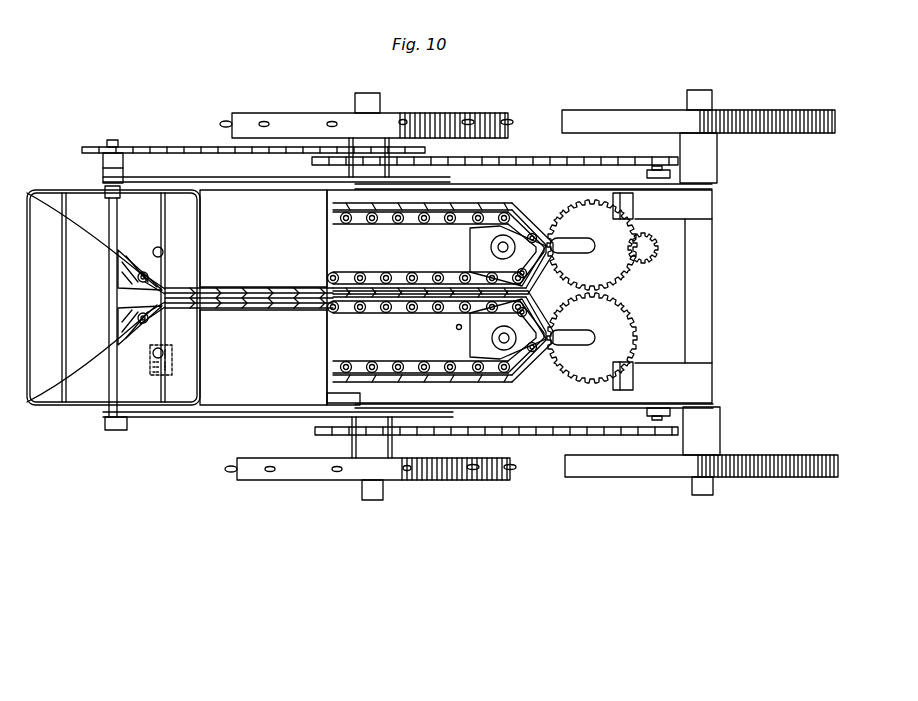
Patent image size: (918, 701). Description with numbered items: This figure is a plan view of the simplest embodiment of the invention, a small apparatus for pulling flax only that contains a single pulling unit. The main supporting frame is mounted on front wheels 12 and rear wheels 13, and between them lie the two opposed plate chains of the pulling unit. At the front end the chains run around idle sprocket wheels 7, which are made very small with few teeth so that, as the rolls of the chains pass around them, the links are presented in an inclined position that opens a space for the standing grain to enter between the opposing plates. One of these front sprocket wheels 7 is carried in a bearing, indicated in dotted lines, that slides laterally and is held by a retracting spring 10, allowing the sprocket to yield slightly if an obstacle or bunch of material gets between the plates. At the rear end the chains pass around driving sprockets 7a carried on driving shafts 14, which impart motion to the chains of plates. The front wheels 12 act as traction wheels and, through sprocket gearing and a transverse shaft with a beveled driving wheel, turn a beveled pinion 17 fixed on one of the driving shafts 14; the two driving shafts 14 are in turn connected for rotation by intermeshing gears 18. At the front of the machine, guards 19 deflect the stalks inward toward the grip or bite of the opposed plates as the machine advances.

The sprocket wheel 7 is at (138, 275).
The rear sprocket 7a is at (490, 250).
The retracting spring 10 is at (156, 378).
The front wheel 12 is at (430, 472).
The wheel 13 is at (650, 470).
The driving shaft 14 is at (567, 338).
The beveled pinion 17 is at (646, 249).
The intermeshing gear 18 is at (605, 223).
The guard 19 is at (80, 202).